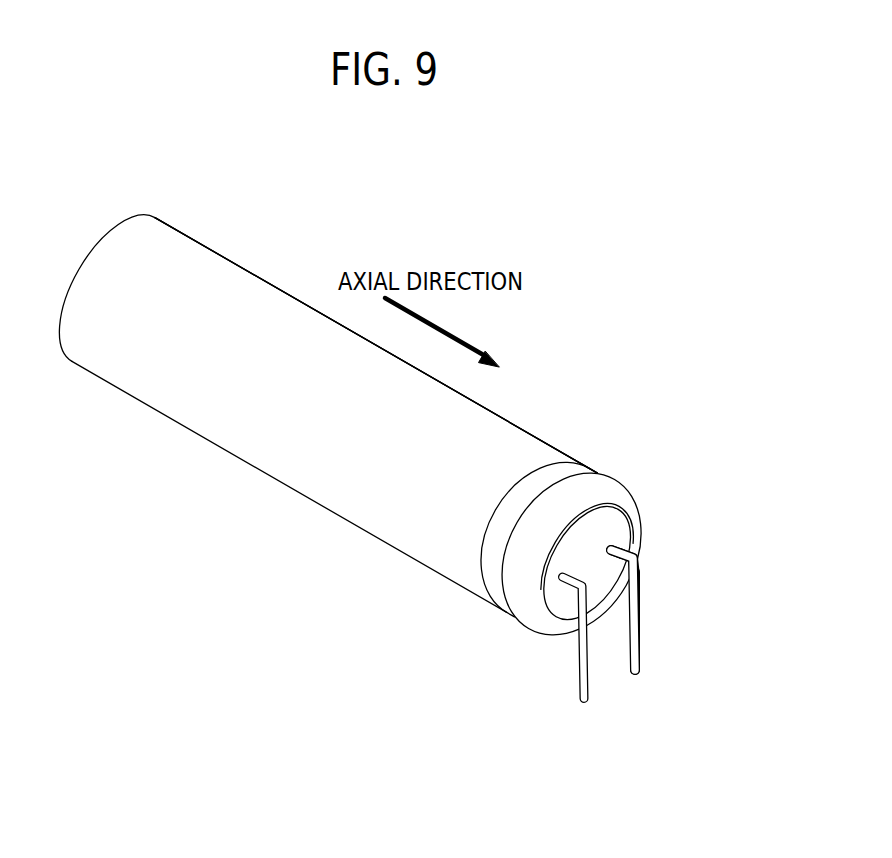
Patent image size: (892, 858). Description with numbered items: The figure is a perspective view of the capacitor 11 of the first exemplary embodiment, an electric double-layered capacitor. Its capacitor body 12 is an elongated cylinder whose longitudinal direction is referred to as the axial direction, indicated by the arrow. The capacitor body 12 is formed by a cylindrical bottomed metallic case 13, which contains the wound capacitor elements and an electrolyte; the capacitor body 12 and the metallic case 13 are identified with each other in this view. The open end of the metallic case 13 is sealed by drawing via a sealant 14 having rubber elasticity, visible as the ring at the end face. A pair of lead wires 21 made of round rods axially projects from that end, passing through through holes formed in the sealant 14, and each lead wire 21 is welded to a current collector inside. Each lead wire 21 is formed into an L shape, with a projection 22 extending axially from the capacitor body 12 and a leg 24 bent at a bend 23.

The capacitor 11 is at (277, 497).
The capacitor body 12 is at (277, 305).
The metallic case 13 is at (376, 346).
The sealant 14 is at (560, 598).
The lead wire 21 is at (580, 648).
The projection 22 is at (628, 543).
The bend 23 is at (638, 567).
The leg 24 is at (637, 605).